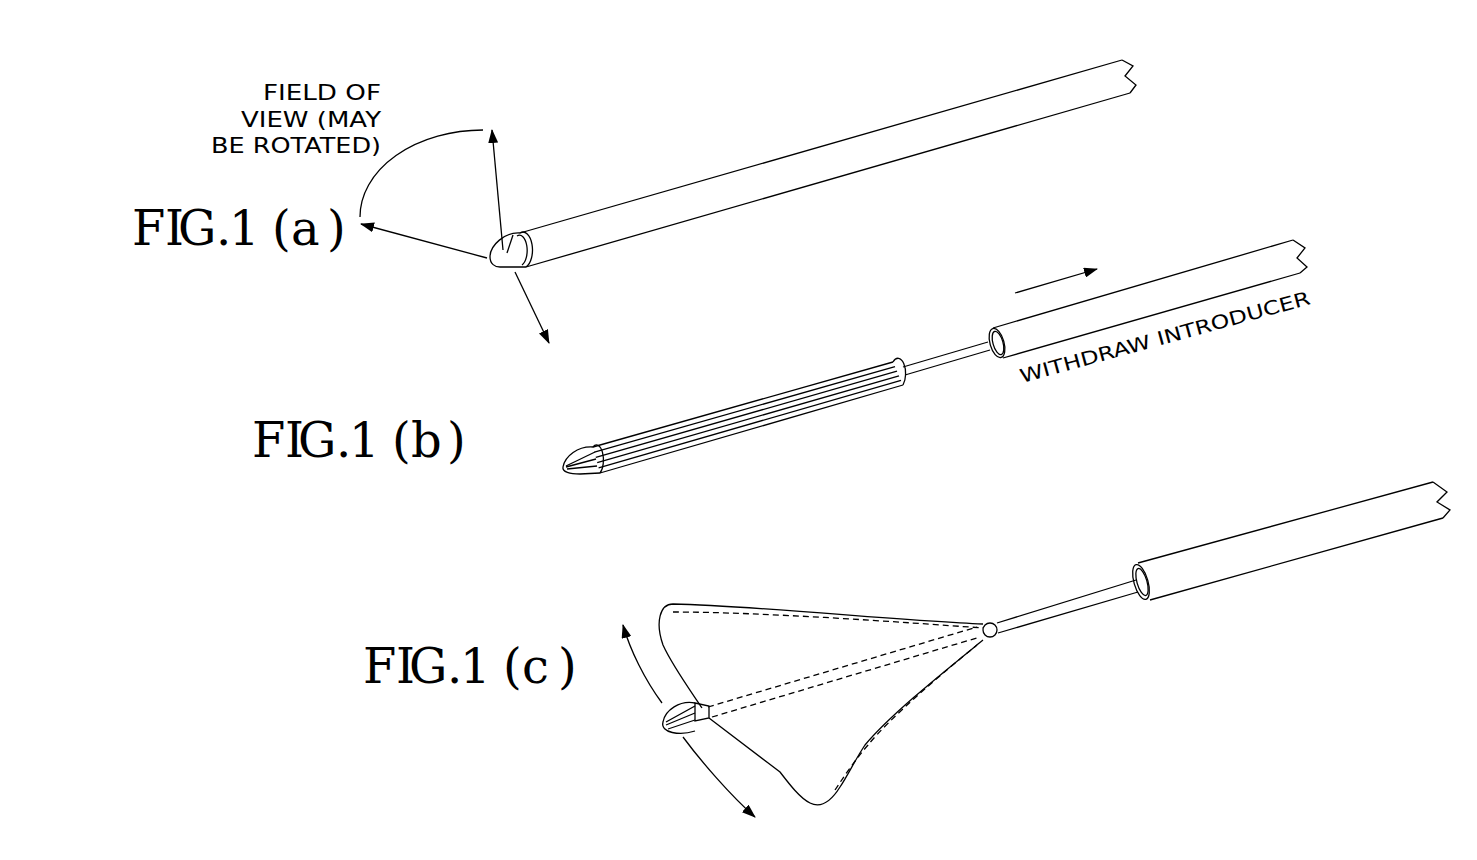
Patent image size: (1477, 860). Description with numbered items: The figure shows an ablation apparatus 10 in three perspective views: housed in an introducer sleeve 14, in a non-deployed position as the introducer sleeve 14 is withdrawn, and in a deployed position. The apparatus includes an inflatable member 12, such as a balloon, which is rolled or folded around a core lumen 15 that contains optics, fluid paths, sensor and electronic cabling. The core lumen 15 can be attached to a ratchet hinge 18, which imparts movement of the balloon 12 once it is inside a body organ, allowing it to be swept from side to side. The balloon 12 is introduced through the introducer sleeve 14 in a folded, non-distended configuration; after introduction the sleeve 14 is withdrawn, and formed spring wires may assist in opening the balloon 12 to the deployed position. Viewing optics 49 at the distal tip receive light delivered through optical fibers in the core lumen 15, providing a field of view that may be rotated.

In FIG. 1B, the ablation apparatus 10 is at (662, 380).
In FIG. 1B, the inflatable member 12 is at (620, 453).
In FIG. 1C, the inflatable member 12 is at (863, 723).
In FIG. 1A, the introducer sleeve 14 is at (855, 142).
In FIG. 1B, the introducer sleeve 14 is at (1172, 273).
In FIG. 1C, the introducer sleeve 14 is at (1317, 512).
In FIG. 1B, the core lumen 15 is at (927, 358).
In FIG. 1C, the core lumen 15 is at (1072, 596).
In FIG. 1C, the ratchet hinge 18 is at (988, 622).
In FIG. 1A, the viewing optics 49 is at (518, 237).
In FIG. 1B, the viewing optics 49 is at (572, 474).
In FIG. 1C, the viewing optics 49 is at (674, 732).